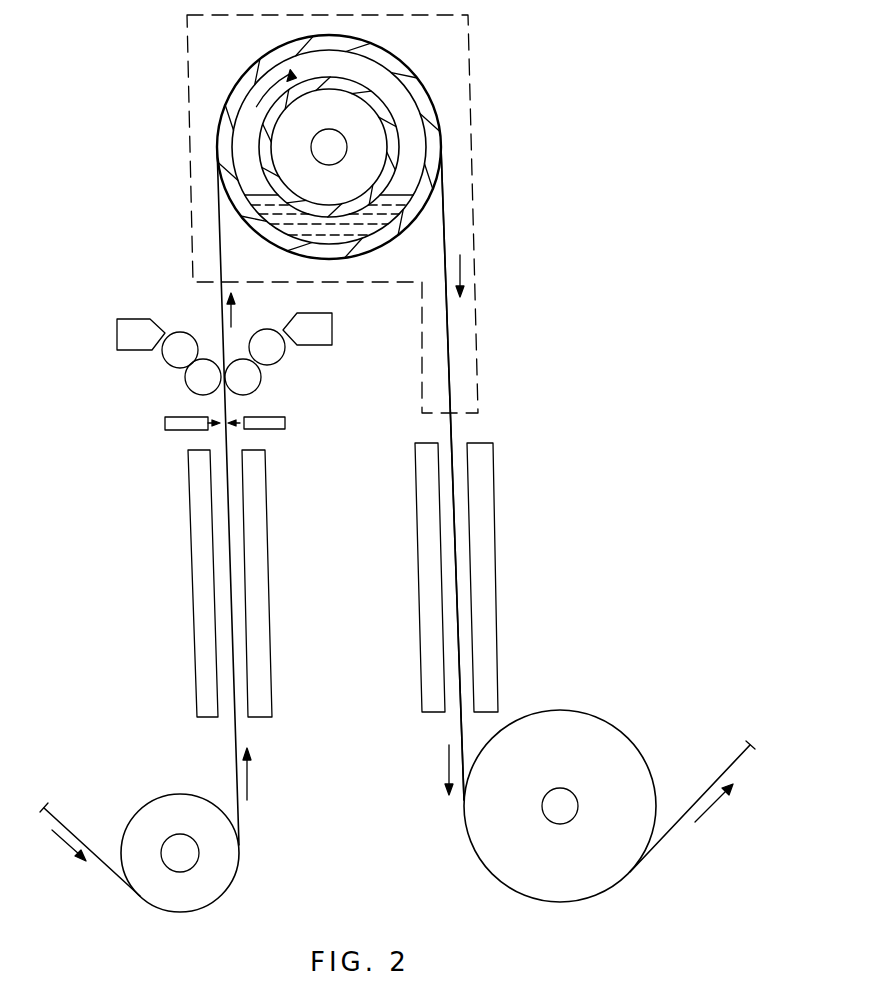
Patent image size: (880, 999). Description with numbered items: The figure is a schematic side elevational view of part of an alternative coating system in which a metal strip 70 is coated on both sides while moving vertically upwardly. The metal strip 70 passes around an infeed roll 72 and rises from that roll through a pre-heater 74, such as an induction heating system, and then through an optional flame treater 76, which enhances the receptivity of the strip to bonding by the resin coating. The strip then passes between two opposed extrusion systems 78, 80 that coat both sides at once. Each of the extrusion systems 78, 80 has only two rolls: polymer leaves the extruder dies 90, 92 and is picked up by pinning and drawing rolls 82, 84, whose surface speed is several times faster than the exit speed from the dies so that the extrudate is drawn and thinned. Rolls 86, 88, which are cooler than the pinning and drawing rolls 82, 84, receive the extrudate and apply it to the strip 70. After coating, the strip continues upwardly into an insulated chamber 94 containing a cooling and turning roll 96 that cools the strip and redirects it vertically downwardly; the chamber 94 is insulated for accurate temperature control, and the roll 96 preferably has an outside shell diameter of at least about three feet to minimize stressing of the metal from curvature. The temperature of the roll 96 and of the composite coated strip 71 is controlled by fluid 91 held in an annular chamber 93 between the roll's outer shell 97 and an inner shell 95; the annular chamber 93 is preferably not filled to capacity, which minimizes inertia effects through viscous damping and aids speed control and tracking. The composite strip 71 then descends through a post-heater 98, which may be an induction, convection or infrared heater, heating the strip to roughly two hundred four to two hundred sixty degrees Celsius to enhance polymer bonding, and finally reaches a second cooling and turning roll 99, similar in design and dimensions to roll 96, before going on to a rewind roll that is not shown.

The metal strip 70 is at (110, 873).
The composite coated strip 71 is at (452, 440).
The infeed roll 72 is at (155, 800).
The pre-heater 74 is at (270, 592).
The flame treater 76 is at (276, 429).
The extrusion system 78 is at (133, 396).
The extrusion system 80 is at (309, 386).
The pinning and drawing roll 82 is at (170, 357).
The pinning and drawing roll 84 is at (277, 356).
The roll 86 is at (195, 384).
The roll 88 is at (252, 384).
The extruder die 90 is at (117, 327).
The fluid 91 is at (265, 215).
The extruder die 92 is at (333, 322).
The annular chamber 93 is at (419, 137).
The insulated chamber 94 is at (187, 98).
The inner shell 95 is at (393, 157).
The cooling and turning roll 96 is at (400, 70).
The outer shell 97 is at (432, 95).
The post-heater 98 is at (497, 592).
The second cooling and turning roll 99 is at (612, 725).